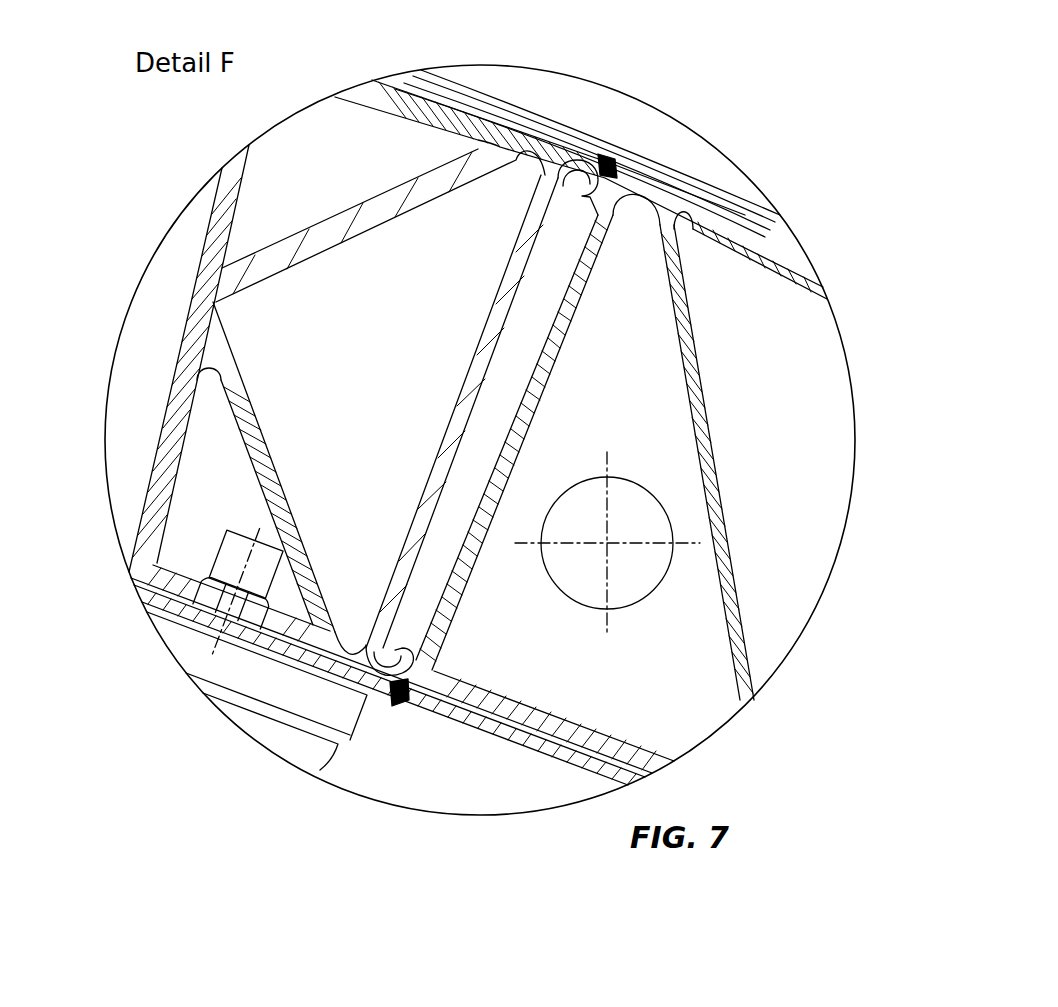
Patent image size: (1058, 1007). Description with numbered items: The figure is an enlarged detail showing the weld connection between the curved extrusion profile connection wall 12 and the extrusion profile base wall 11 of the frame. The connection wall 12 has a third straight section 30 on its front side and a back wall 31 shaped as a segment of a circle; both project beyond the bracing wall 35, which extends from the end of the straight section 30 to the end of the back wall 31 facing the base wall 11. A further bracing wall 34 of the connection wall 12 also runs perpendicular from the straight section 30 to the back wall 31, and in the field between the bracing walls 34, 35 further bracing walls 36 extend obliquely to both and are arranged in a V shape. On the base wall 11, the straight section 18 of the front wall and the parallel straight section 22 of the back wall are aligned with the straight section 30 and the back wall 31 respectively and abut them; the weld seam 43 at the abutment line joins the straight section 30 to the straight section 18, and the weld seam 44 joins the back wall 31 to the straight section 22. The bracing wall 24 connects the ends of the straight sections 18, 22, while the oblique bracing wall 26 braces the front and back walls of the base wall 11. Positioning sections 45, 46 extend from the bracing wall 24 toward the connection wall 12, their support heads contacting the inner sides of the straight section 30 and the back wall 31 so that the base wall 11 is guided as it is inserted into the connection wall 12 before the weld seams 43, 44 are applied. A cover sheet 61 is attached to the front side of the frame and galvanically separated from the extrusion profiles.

The extrusion profile base wall 11 is at (693, 703).
The curved extrusion profile connection wall 12 is at (192, 498).
The straight section 18 is at (773, 242).
The straight section 22 is at (533, 740).
The bracing wall 24 is at (554, 361).
The bracing wall 26 is at (714, 450).
The straight section 30 is at (410, 97).
The back wall 31 is at (268, 645).
The bracing wall 34 is at (160, 445).
The bracing wall 35 is at (470, 380).
The bracing wall 36 is at (366, 229).
The weld seam 43 is at (609, 160).
The weld seam 44 is at (392, 703).
The positioning section 45 is at (577, 185).
The positioning section 46 is at (388, 662).
The cover sheet 61 is at (666, 166).